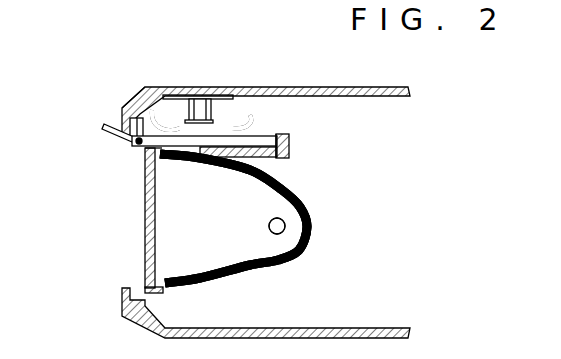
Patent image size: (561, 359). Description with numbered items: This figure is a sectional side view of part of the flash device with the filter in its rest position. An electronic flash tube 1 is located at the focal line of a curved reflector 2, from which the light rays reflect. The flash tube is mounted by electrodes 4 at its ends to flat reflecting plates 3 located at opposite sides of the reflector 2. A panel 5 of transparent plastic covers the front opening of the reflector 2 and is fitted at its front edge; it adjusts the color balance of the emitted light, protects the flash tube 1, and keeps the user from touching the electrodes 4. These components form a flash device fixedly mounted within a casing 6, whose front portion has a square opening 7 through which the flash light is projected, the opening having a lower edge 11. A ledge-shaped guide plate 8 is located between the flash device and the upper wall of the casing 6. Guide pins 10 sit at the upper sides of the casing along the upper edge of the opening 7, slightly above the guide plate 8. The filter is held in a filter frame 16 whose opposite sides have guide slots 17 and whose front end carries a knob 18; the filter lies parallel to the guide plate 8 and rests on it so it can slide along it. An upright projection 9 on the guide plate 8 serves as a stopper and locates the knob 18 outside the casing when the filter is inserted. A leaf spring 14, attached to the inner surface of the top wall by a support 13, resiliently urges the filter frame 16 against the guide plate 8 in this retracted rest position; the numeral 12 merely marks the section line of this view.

The electronic flash tube 1 is at (278, 233).
The curved reflector 2 is at (309, 198).
The flat reflecting plates 3 is at (217, 260).
The electrodes 4 is at (295, 243).
The panel 5 is at (145, 240).
The casing 6 is at (340, 90).
The square opening 7 is at (133, 206).
The guide plate 8 is at (272, 158).
The upright projection 9 is at (289, 143).
The guide pins 10 is at (132, 120).
The lower edge 11 is at (135, 290).
The chamfered plate end 12 is at (152, 118).
The support 13 is at (210, 97).
The leaf spring 14 is at (175, 117).
The filter frame 16 is at (274, 136).
The guide slots 17 is at (232, 140).
The knob 18 is at (124, 132).